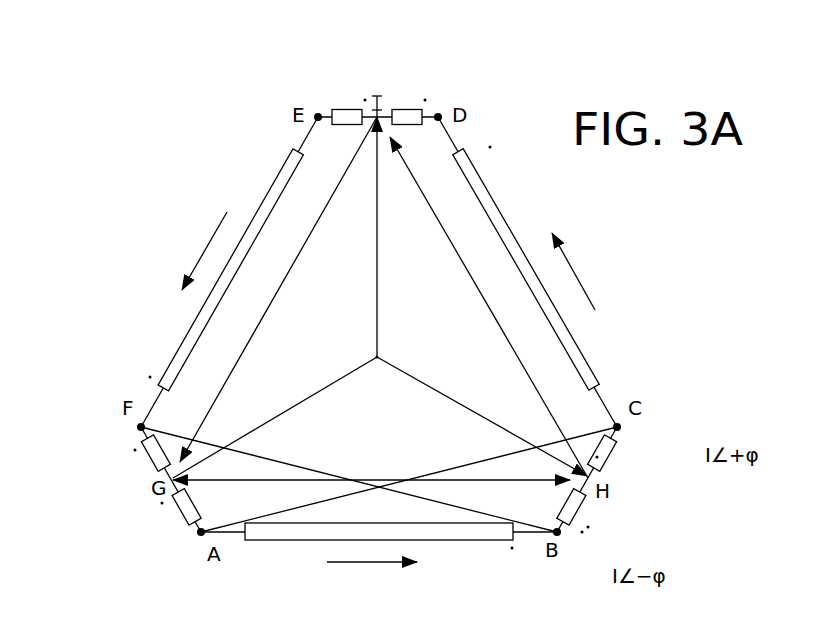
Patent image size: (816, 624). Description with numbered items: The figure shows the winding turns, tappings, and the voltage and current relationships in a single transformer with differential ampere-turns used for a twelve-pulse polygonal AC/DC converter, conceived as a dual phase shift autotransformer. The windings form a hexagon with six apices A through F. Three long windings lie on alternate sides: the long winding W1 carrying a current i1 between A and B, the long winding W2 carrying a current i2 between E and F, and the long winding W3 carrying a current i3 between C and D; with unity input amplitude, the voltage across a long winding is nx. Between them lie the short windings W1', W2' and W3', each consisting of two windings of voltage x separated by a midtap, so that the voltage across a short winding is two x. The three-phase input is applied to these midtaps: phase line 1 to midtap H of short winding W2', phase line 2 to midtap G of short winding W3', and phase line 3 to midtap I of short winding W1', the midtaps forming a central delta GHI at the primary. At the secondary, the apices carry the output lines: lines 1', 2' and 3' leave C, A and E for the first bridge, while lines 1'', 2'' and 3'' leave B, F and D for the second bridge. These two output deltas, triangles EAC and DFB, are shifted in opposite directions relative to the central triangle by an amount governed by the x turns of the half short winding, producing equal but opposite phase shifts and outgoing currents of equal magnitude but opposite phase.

The long winding W1 is at (379, 559).
The long winding W2 is at (229, 272).
The long winding W3 is at (531, 272).
The short winding W1' is at (378, 90).
The short winding W2' is at (618, 479).
The short winding W3' is at (152, 479).
The phase line 1 is at (482, 416).
The phase line 2 is at (275, 417).
The phase line 3 is at (391, 237).
The neutral point N is at (403, 350).
The output line 1' is at (671, 410).
The output line 1'' is at (580, 574).
The output line 2' is at (179, 574).
The output line 2'' is at (88, 412).
The output line 3' is at (282, 74).
The output line 3'' is at (479, 74).
The current i1 is at (365, 564).
The current i2 is at (218, 227).
The current i3 is at (568, 260).